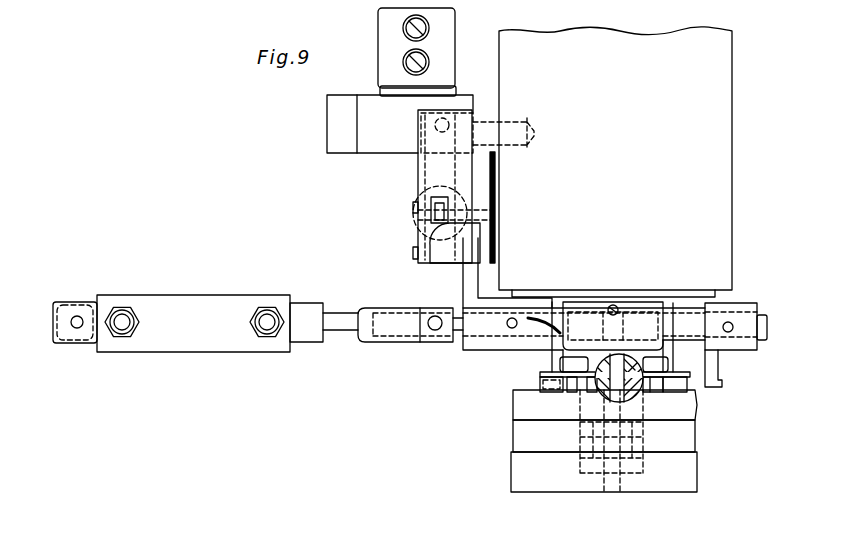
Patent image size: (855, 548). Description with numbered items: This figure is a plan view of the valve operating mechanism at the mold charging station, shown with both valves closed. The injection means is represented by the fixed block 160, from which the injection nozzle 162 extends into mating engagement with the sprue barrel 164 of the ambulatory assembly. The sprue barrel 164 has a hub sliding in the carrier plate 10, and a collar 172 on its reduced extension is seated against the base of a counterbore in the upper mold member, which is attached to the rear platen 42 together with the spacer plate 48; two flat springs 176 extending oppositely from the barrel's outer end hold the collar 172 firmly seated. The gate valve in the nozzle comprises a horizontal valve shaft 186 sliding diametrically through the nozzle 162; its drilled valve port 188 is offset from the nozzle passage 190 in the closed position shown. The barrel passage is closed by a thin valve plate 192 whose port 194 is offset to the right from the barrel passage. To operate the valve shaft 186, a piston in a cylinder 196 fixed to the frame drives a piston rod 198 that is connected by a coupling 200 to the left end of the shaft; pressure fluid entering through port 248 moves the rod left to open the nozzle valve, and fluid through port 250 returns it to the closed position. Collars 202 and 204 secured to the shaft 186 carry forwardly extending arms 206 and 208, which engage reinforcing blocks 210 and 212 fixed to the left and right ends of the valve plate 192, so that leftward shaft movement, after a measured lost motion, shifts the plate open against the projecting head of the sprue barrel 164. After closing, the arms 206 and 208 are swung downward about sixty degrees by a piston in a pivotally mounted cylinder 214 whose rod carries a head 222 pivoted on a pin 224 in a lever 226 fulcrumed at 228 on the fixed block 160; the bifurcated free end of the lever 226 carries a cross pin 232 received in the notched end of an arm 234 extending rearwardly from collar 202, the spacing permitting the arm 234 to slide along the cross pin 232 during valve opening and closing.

The fixed block 160 is at (722, 62).
The fulcrum 228 is at (488, 118).
The lever 226 is at (478, 178).
The pin 224 is at (492, 212).
The cylinder 214 is at (413, 206).
The head 222 is at (440, 218).
The cross pin 232 is at (445, 260).
The arm 234 is at (470, 282).
The collar 202 is at (500, 307).
The valve port 188 is at (652, 300).
The collar 204 is at (740, 306).
The arm 208 is at (715, 383).
The flat springs 176 is at (672, 372).
The valve plate 192 is at (687, 374).
The reinforcing block 212 is at (672, 386).
The arm 206 is at (542, 373).
The reinforcing block 210 is at (557, 391).
The injection nozzle 162 is at (593, 356).
The nozzle passage 190 is at (614, 356).
The sprue barrel 164 is at (600, 394).
The port 194 is at (638, 400).
The collar 172 is at (580, 467).
The carrier plate 10 is at (695, 413).
The rear platen 42 is at (690, 437).
The spacer plate 48 is at (690, 468).
The valve shaft 186 is at (456, 333).
The coupling 200 is at (390, 343).
The piston rod 198 is at (340, 331).
The cylinder 196 is at (197, 353).
The port 250 is at (127, 329).
The port 248 is at (267, 329).